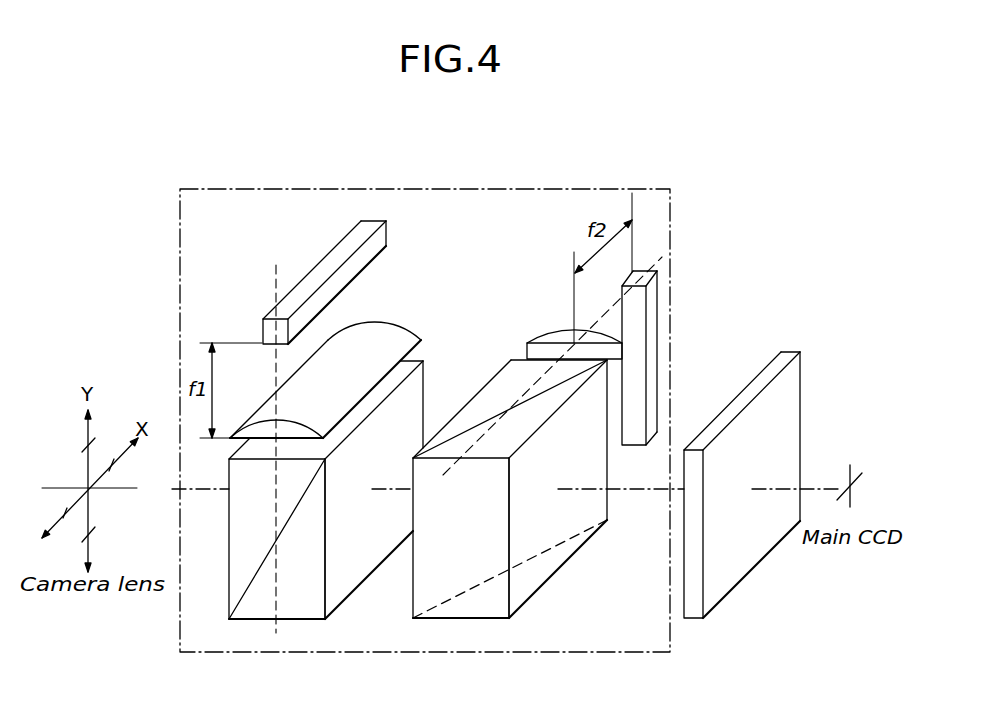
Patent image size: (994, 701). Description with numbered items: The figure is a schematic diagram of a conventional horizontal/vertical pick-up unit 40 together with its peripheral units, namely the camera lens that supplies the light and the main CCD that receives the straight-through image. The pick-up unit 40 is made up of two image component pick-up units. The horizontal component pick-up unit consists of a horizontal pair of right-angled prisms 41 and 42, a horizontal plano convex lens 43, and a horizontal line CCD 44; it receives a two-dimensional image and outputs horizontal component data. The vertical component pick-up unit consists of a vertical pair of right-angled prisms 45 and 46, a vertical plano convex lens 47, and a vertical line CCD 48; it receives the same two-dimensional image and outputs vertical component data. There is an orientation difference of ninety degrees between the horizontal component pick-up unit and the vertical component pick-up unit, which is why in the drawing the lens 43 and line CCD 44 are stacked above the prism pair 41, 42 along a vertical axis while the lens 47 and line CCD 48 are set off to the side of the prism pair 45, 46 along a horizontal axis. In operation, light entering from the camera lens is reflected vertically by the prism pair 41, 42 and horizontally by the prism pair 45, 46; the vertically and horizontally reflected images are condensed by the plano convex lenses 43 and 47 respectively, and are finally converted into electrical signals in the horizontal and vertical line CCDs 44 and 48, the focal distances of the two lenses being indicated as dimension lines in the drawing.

The horizontal/vertical pick-up unit 40 is at (422, 189).
The prism 41 is at (233, 546).
The prism 42 is at (347, 590).
The horizontal plano convex lens 43 is at (377, 326).
The horizontal line CCD 44 is at (387, 230).
The prism 45 is at (500, 370).
The prism 46 is at (538, 588).
The vertical plano convex lens 47 is at (543, 330).
The vertical line CCD 48 is at (662, 317).